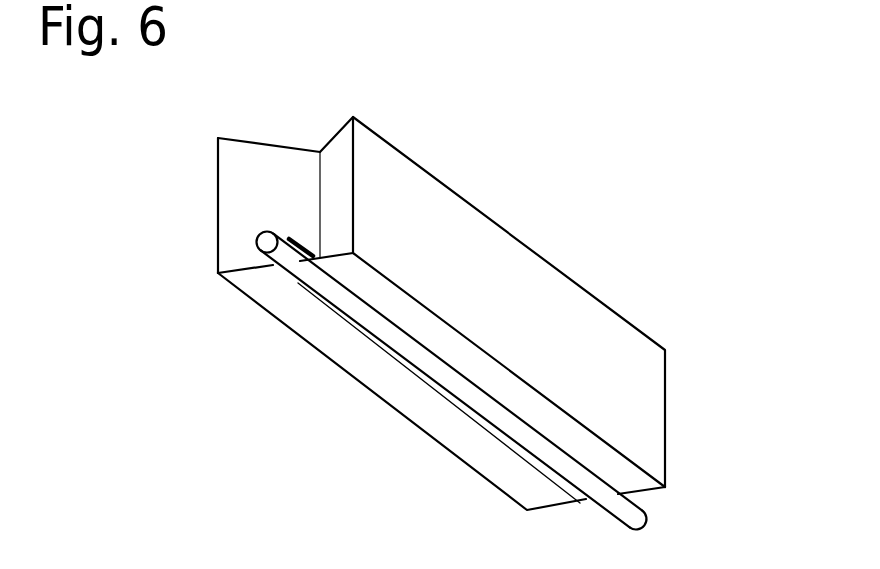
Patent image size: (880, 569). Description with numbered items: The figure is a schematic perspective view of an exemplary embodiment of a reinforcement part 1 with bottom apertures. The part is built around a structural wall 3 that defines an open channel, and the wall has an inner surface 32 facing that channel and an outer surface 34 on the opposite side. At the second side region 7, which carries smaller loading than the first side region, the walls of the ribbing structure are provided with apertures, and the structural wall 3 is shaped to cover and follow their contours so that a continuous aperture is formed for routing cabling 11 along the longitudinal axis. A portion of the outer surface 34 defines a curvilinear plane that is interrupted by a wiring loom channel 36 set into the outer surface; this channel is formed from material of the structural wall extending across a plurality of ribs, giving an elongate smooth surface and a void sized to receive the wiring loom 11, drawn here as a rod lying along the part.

The profile body 1 is at (372, 413).
The structural wall 3 is at (463, 435).
The second side region 7 is at (653, 507).
The cabling 11 is at (347, 303).
The inner surface 32 is at (310, 252).
The outer surface 34 is at (258, 282).
The wiring loom channel 36 is at (298, 283).